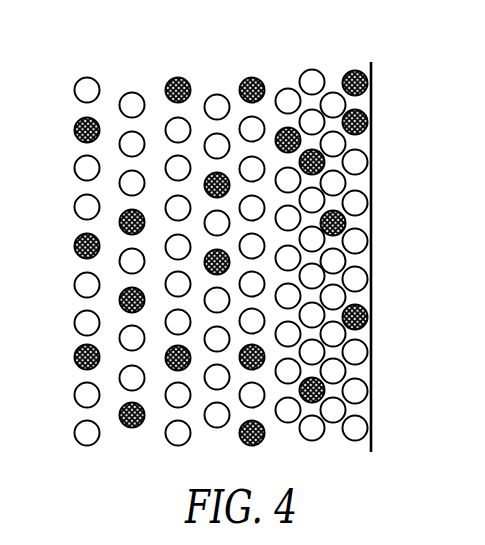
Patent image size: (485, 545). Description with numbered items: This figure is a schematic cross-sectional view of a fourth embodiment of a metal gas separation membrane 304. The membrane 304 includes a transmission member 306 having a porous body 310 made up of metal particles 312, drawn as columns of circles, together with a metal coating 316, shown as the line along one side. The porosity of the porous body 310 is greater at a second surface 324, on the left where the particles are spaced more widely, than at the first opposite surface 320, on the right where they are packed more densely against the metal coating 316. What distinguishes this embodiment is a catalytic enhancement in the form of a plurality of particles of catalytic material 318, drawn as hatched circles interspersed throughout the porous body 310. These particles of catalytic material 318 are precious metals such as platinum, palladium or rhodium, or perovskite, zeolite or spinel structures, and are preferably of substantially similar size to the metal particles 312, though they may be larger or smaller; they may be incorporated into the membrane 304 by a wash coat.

The metal gas separation membrane 304 is at (185, 73).
The transmission member 306 is at (142, 84).
The porous body 310 is at (275, 88).
The metal particles 312 is at (119, 145).
The metal coating 316 is at (371, 100).
The particles of catalytic material 318 is at (120, 297).
The first opposite surface 320 is at (366, 335).
The second surface 324 is at (86, 268).